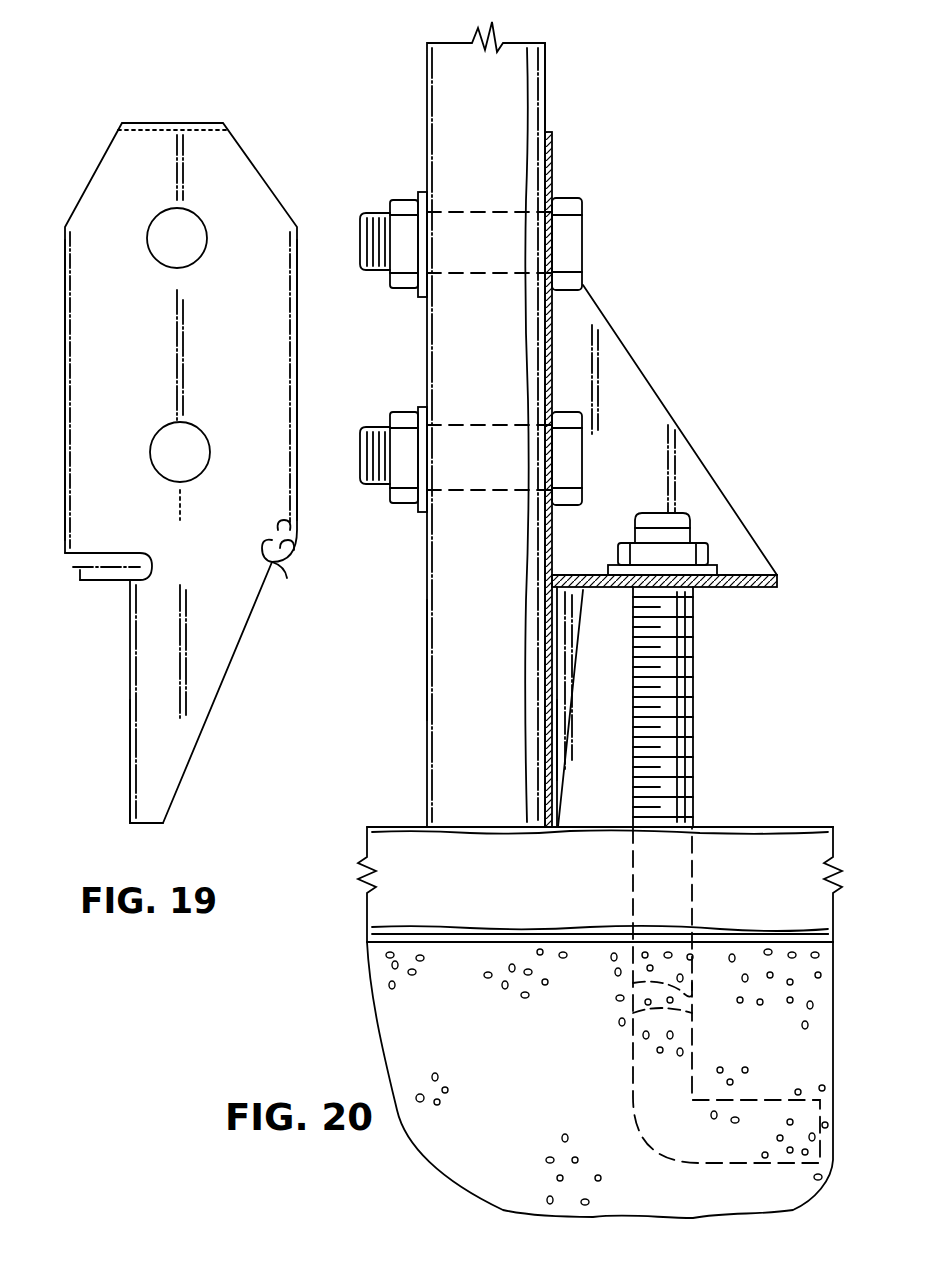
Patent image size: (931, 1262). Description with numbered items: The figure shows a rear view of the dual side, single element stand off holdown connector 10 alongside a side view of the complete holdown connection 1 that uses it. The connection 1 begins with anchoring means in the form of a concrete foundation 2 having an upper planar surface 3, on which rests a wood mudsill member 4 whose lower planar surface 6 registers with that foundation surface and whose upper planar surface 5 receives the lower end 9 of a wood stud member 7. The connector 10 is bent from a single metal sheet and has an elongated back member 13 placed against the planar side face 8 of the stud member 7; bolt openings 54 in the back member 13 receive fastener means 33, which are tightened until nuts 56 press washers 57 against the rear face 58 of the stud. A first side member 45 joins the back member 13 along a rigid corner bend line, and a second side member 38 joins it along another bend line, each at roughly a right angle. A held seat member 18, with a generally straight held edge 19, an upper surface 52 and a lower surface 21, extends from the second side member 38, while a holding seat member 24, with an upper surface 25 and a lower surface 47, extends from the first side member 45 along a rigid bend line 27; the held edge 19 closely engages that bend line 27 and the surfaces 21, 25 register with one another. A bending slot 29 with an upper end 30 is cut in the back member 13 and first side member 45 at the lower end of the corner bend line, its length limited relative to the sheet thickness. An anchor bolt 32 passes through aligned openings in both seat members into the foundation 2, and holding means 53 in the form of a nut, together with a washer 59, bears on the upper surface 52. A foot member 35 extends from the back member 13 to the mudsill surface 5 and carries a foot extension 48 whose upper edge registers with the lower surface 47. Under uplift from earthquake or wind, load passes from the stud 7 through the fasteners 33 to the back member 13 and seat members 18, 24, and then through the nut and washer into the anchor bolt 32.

In FIG. 19, the dual side, single element stand off holdown connector 10 is at (72, 203).
In FIG. 20, the dual side, single element stand off holdown connector 10 is at (682, 405).
In FIG. 19, the bolt openings 54 is at (195, 220).
In FIG. 19, the elongated back member 13 is at (250, 340).
In FIG. 20, the elongated back member 13 is at (555, 152).
In FIG. 19, the second side member 38 is at (66, 357).
In FIG. 20, the second side member 38 is at (640, 465).
In FIG. 19, the first side member 45 is at (298, 352).
In FIG. 19, the bending slot 29 is at (268, 556).
In FIG. 19, the upper end of bending slot 30 is at (289, 527).
In FIG. 19, the held edge 19 is at (296, 555).
In FIG. 19, the rigid bend line 27 is at (285, 580).
In FIG. 19, the lower surface of held seat member 21 is at (84, 581).
In FIG. 19, the lower surface of holding seat member 47 is at (112, 572).
In FIG. 19, the upper surface of holding seat member 25 is at (122, 570).
In FIG. 19, the foot member 35 is at (220, 691).
In FIG. 20, the foot member 35 is at (591, 676).
In FIG. 19, the foot extension 48 is at (128, 723).
In FIG. 20, the foot extension 48 is at (579, 772).
In FIG. 20, the wood stud member 7 is at (418, 54).
In FIG. 20, the planar side face 8 is at (548, 68).
In FIG. 20, the holdown connection 1 is at (628, 320).
In FIG. 20, the fastener means 33 is at (360, 210).
In FIG. 20, the nuts 56 is at (404, 204).
In FIG. 20, the washers 57 is at (421, 298).
In FIG. 20, the holding seat member 24 is at (735, 596).
In FIG. 20, the held seat member 18 is at (575, 568).
In FIG. 20, the upper surface of held seat member 52 is at (745, 573).
In FIG. 20, the anchor bolt 32 is at (703, 690).
In FIG. 20, the washer 59 is at (714, 566).
In FIG. 20, the holding means 53 is at (690, 535).
In FIG. 20, the rear face of wood stud member 58 is at (426, 660).
In FIG. 20, the wood mudsill member 4 is at (358, 838).
In FIG. 20, the upper planar surface of mudsill 5 is at (753, 826).
In FIG. 20, the lower end of wood stud member 9 is at (462, 837).
In FIG. 20, the concrete foundation 2 is at (760, 1046).
In FIG. 20, the upper planar surface of concrete foundation 3 is at (707, 925).
In FIG. 20, the lower planar surface of mudsill 6 is at (768, 960).